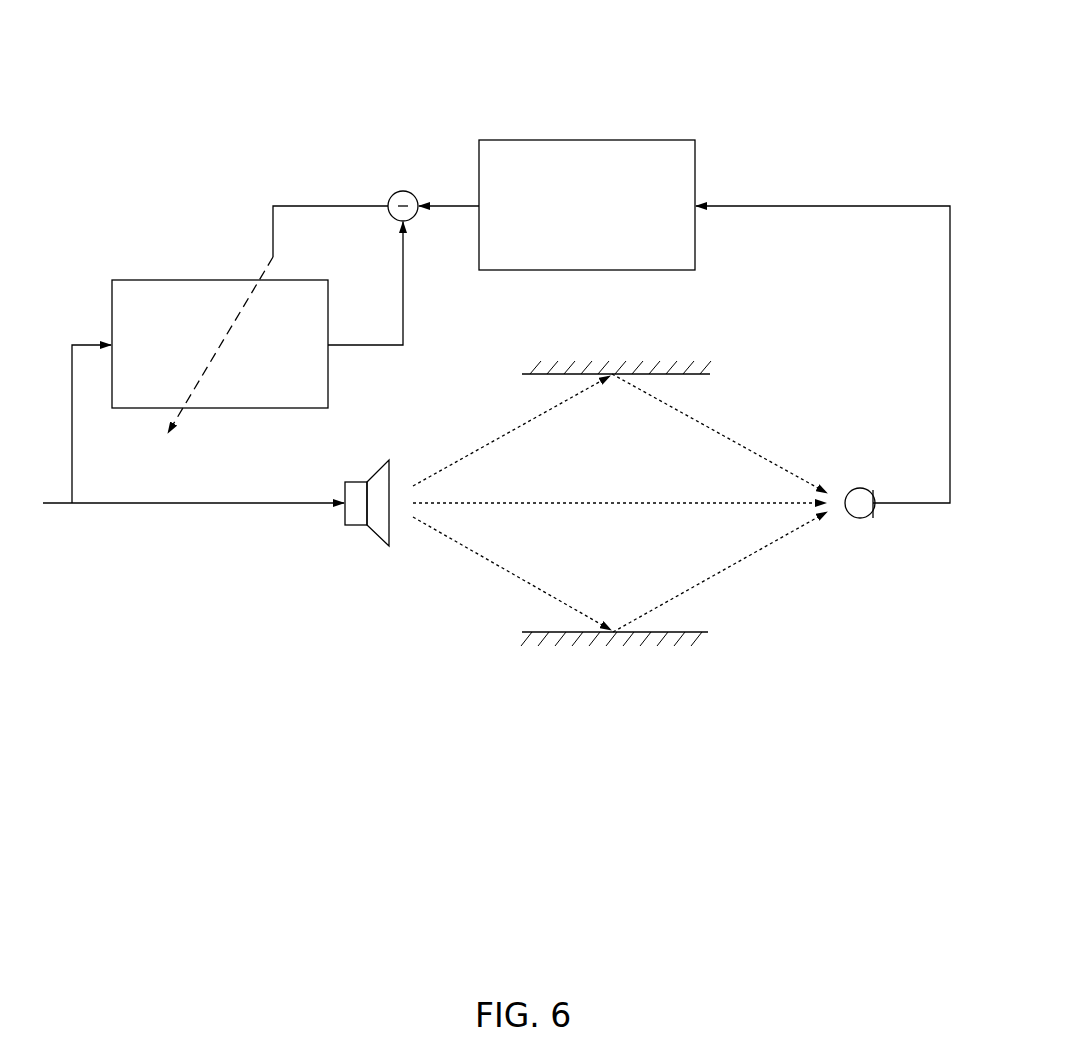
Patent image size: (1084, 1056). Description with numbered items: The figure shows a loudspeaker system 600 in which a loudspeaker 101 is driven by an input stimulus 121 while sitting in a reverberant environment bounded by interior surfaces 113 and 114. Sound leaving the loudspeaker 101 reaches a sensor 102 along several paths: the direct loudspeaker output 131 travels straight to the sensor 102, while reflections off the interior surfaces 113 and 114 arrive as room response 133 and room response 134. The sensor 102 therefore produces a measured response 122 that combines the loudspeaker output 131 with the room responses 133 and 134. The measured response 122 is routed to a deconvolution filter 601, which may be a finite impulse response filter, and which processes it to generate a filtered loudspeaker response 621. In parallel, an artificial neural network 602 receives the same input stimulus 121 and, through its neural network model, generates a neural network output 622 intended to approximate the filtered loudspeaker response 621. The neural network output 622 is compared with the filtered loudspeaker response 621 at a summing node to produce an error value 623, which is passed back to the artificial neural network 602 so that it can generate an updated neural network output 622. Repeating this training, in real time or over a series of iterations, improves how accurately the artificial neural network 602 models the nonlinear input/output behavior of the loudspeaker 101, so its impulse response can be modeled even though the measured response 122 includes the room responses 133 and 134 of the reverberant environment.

The loudspeaker system 600 is at (812, 88).
The deconvolution filter 601 is at (587, 205).
The artificial neural network 602 is at (220, 344).
The filtered loudspeaker response 621 is at (450, 204).
The neural network output 622 is at (312, 203).
The error value 623 is at (403, 292).
The loudspeaker 101 is at (355, 482).
The sensor 102 is at (878, 537).
The interior surface 113 is at (545, 378).
The interior surface 114 is at (547, 630).
The input stimulus 121 is at (245, 505).
The measured response 122 is at (950, 315).
The loudspeaker output 131 is at (487, 447).
The room response 133 is at (702, 422).
The room response 134 is at (705, 578).